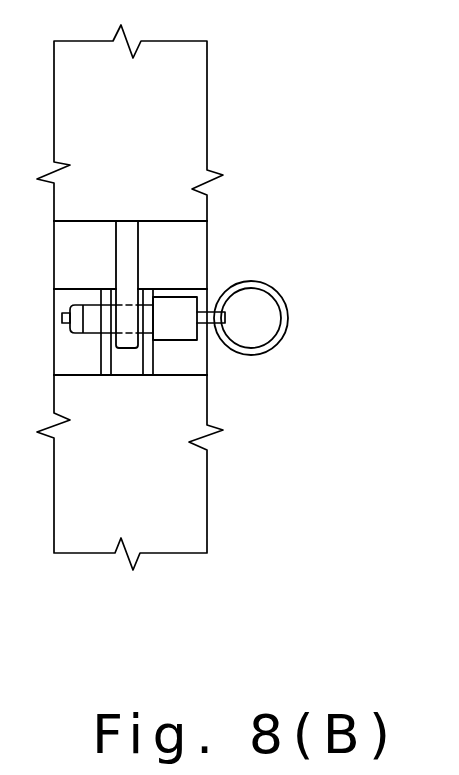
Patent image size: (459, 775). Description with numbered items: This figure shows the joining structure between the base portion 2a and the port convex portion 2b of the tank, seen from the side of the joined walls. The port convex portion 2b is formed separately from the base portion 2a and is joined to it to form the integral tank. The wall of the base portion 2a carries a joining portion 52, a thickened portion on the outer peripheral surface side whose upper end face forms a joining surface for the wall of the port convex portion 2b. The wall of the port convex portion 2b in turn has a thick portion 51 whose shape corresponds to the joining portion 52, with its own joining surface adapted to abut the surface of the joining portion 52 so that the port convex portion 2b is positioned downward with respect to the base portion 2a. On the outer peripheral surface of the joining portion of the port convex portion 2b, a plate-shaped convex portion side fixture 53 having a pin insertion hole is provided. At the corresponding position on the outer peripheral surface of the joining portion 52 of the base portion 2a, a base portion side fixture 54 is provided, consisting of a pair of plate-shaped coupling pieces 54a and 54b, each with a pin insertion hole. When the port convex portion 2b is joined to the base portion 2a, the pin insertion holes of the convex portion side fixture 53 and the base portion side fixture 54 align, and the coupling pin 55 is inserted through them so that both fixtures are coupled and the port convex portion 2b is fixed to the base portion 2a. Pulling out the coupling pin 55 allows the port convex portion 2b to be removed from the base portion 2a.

The base portion 2a is at (175, 499).
The port convex portion 2b is at (177, 90).
The thick portion 51 is at (190, 240).
The joining portion 52 is at (188, 367).
The convex portion side fixture 53 is at (140, 268).
The base portion side fixture 54 is at (263, 356).
The coupling piece 54a is at (148, 352).
The coupling piece 54b is at (110, 364).
The coupling pin 55 is at (287, 332).